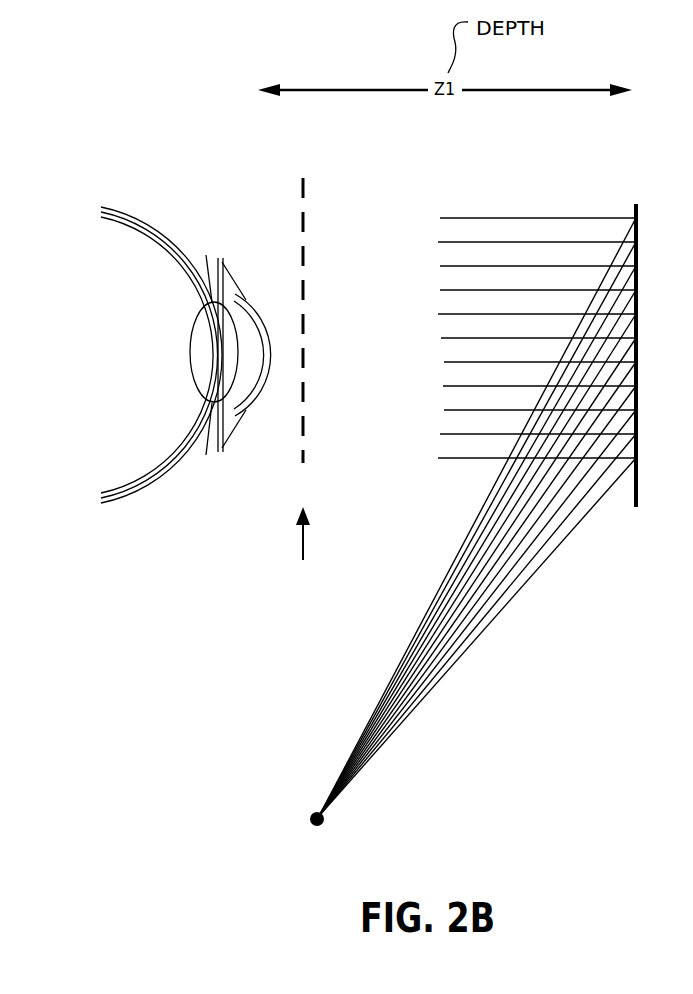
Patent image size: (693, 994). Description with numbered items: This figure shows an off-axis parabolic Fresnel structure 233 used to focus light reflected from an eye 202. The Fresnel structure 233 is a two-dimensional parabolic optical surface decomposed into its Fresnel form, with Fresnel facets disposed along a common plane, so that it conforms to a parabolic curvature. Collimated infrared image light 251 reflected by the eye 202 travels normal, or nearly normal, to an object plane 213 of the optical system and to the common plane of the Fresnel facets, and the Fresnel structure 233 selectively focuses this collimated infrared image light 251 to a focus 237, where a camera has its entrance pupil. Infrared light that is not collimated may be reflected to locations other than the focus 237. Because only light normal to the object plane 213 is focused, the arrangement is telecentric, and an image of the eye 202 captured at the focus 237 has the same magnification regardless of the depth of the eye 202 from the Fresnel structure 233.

The eye 202 is at (122, 204).
The object plane 213 is at (302, 549).
The off-axis parabolic Fresnel structure 233 is at (634, 510).
The focus 237 is at (325, 815).
The collimated infrared image light 251 is at (636, 188).